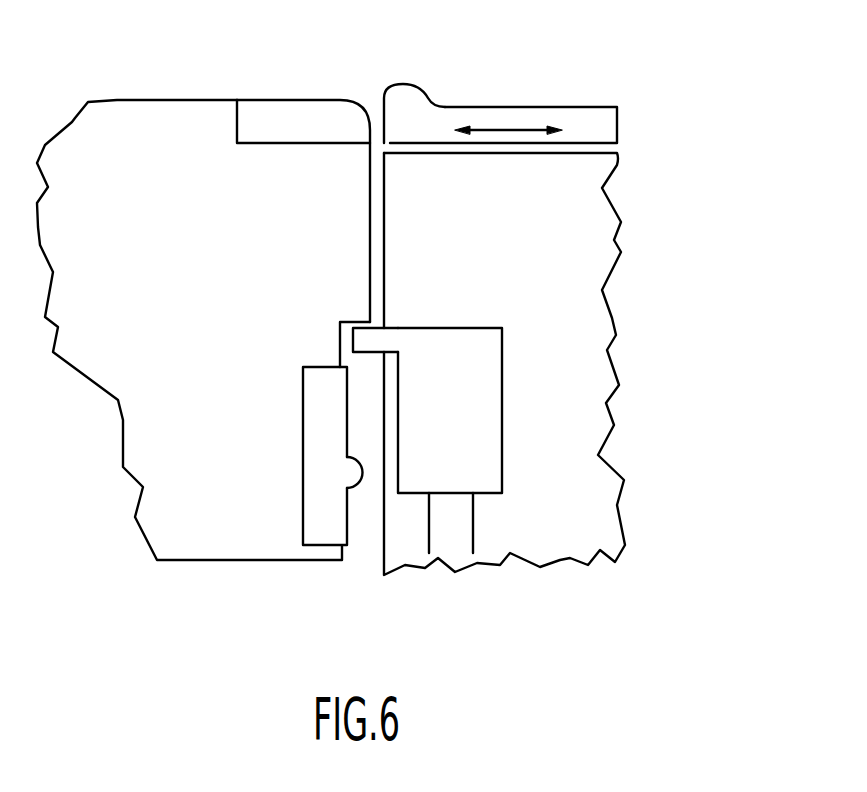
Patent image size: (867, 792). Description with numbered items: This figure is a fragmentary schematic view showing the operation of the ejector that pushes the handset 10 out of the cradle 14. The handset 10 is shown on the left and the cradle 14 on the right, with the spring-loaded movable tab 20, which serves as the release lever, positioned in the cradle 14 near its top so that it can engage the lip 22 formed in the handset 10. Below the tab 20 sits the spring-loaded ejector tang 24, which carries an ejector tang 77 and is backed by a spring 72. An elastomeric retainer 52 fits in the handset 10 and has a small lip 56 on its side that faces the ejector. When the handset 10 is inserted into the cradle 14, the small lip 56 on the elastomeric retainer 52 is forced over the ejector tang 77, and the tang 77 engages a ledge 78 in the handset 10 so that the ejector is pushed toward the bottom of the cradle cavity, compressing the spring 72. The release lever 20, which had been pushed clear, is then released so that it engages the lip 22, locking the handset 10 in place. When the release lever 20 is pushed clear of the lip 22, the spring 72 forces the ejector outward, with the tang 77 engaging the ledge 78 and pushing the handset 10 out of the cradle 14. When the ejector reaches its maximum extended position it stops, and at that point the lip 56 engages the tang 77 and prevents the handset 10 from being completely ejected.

The handset 10 is at (157, 90).
The cradle 14 is at (660, 143).
The movable tab 20 is at (493, 107).
The lip 22 is at (268, 117).
The ejector tang 24 is at (497, 418).
The elastomeric retainer 52 is at (325, 538).
The lip 56 is at (358, 478).
The spring 72 is at (465, 523).
The ejector tang 77 is at (375, 338).
The ledge 78 is at (355, 320).